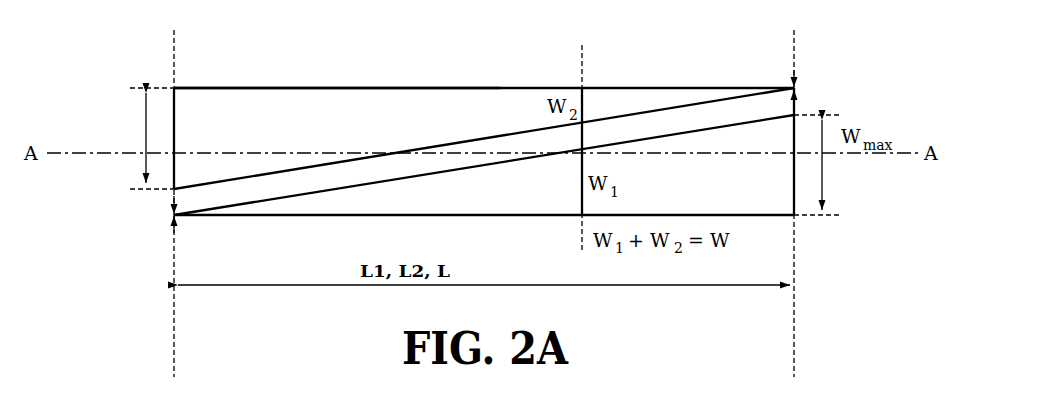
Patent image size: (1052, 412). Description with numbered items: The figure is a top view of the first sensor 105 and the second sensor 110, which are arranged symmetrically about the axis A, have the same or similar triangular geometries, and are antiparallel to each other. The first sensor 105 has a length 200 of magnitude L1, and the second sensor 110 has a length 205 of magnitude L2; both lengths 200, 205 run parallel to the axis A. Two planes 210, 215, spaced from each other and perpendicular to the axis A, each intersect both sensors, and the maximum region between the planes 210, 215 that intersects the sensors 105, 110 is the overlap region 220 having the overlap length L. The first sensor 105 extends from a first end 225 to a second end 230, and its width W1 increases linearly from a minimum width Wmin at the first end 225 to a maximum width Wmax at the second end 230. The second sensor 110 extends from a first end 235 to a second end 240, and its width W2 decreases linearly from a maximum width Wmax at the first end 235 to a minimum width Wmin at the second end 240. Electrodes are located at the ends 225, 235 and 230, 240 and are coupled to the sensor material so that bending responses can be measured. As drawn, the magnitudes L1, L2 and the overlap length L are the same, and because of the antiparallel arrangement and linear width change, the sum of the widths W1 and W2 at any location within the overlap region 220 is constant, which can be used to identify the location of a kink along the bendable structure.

The first sensor 105 is at (772, 206).
The second sensor 110 is at (190, 107).
The length 200 is at (525, 213).
The length 205 is at (330, 89).
The plane 210 is at (176, 194).
The plane 215 is at (795, 194).
The overlap region 220 is at (453, 71).
The first end 225 is at (164, 216).
The second end 230 is at (801, 181).
The first end 235 is at (163, 134).
The second end 240 is at (803, 88).